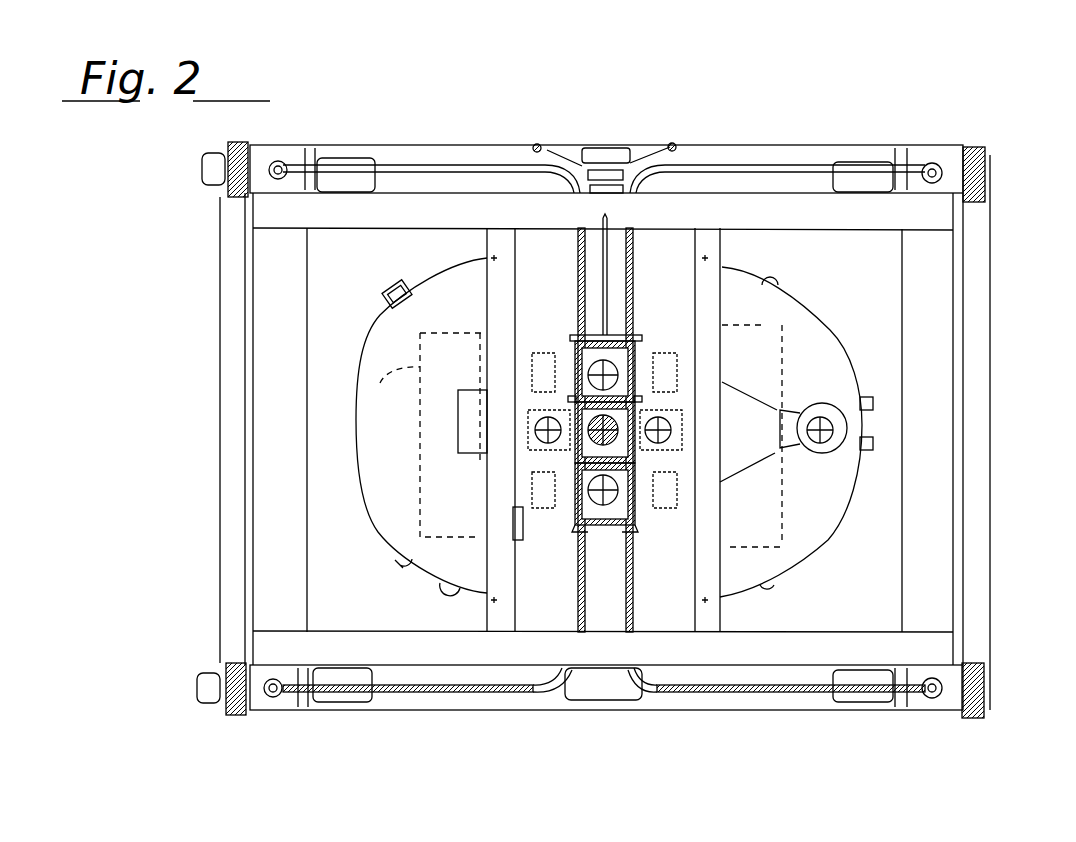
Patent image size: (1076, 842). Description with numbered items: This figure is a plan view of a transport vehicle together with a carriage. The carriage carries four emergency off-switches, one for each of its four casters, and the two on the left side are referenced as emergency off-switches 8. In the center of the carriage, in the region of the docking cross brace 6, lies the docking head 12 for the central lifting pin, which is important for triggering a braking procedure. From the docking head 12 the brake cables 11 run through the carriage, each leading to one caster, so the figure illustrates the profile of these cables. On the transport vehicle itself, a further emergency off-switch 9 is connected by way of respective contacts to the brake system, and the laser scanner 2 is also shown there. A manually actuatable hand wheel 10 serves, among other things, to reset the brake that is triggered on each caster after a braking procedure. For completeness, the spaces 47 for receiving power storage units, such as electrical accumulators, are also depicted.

The laser scanner 2 is at (832, 423).
The docking cross brace 6 is at (617, 367).
The emergency off-switches 8 is at (226, 198).
The emergency off-switch 9 is at (385, 294).
The hand wheel 10 is at (600, 157).
The brake cables 11 is at (513, 688).
The docking head 12 is at (603, 430).
The spaces for receiving power storage units 47 is at (452, 518).